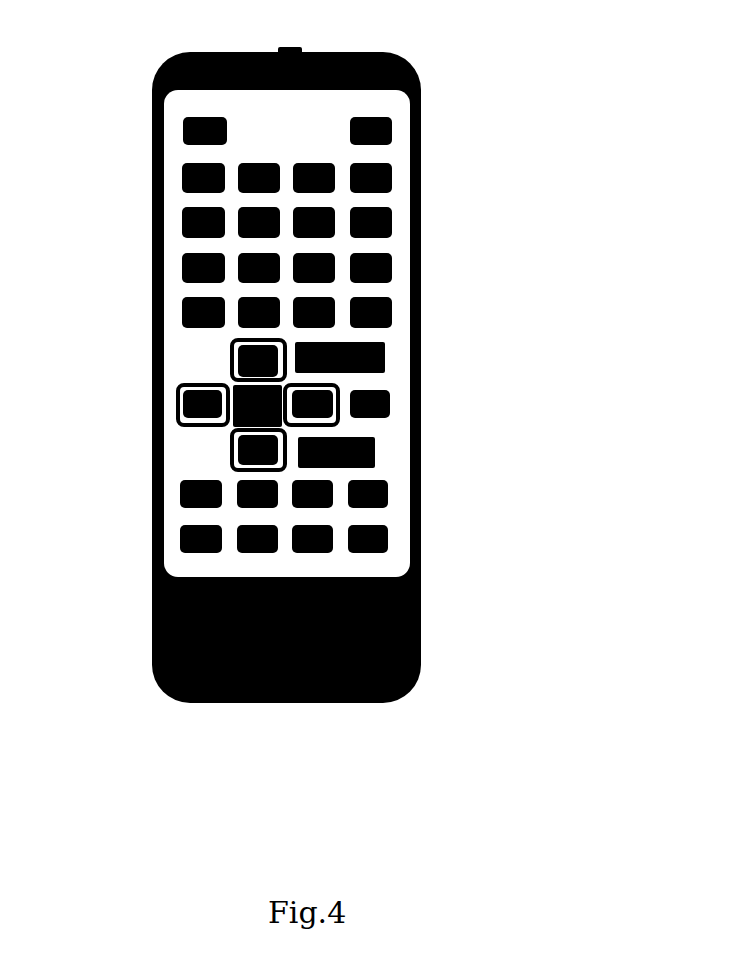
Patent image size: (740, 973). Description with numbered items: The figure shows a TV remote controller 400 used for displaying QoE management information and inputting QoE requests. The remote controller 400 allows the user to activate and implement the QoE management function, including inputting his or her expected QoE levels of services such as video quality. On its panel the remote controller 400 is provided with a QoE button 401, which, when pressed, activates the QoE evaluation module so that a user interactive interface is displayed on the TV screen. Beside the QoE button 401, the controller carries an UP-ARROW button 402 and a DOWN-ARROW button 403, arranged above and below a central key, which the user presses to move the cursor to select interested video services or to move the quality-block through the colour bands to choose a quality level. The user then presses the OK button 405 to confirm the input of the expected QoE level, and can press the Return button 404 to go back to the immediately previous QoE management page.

The TV remote controller 400 is at (375, 38).
The QoE button 401 is at (385, 357).
The UP-ARROW button 402 is at (232, 359).
The DOWN-ARROW button 403 is at (232, 448).
The Return button 404 is at (375, 455).
The OK button 405 is at (178, 409).